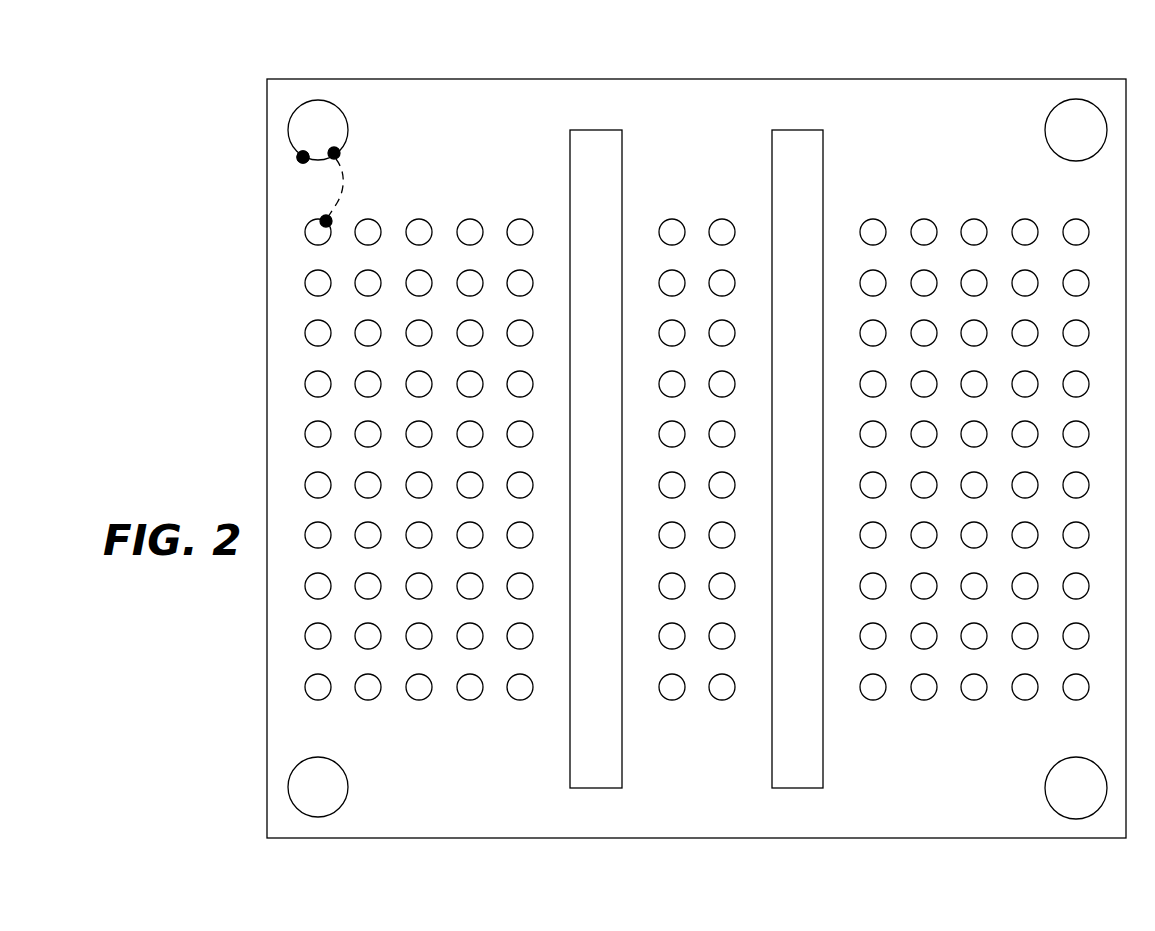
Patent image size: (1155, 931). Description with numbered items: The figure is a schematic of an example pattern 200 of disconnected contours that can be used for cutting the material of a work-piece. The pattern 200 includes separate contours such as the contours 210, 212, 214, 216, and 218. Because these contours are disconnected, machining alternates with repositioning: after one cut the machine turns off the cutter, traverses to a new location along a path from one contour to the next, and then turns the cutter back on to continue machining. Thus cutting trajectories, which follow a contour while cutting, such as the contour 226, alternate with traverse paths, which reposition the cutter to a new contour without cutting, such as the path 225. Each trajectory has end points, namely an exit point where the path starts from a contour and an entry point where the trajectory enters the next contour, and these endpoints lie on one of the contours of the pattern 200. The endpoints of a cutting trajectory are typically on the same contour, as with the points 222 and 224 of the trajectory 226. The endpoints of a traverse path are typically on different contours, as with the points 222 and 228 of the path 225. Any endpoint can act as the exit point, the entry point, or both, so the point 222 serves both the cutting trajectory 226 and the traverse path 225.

The pattern 200 is at (232, 450).
The contour 210 is at (471, 219).
The contour 212 is at (516, 219).
The contour 214 is at (671, 219).
The contour 216 is at (975, 219).
The contour 218 is at (1071, 100).
The point 222 is at (340, 153).
The point 224 is at (303, 161).
The path 225 is at (346, 189).
The contour 226 is at (306, 160).
The point 228 is at (328, 224).